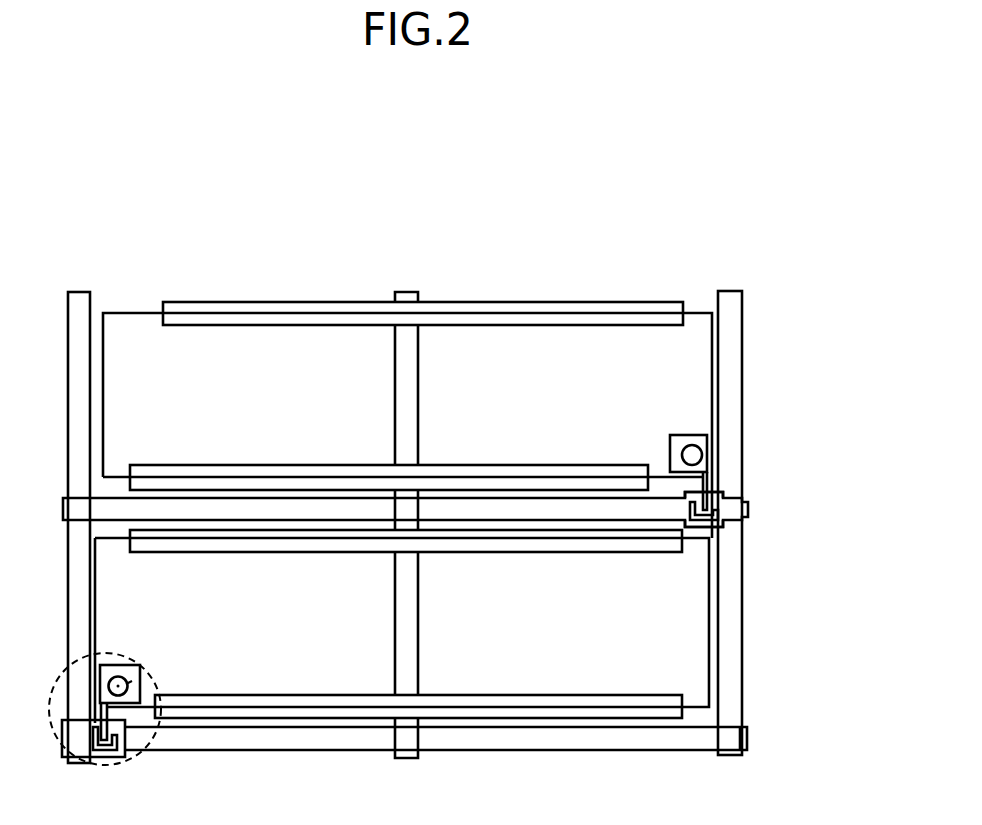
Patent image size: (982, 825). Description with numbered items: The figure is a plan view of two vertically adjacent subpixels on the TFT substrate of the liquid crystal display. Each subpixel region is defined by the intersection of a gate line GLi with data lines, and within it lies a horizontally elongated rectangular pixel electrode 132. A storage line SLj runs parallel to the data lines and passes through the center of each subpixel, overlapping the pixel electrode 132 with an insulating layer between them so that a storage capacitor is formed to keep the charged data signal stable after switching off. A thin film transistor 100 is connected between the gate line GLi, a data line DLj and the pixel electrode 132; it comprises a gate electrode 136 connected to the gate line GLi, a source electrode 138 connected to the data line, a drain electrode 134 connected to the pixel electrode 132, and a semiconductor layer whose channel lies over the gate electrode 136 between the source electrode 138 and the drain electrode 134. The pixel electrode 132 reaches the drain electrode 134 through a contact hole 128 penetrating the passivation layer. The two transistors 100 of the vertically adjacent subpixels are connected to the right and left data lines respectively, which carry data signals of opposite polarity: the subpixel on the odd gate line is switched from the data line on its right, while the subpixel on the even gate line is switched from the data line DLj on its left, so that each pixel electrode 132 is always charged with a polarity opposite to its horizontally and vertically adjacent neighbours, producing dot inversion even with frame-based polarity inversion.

The thin film transistor 100 is at (150, 672).
The contact hole 128 is at (688, 449).
The pixel electrode 132 is at (575, 312).
The drain electrode 134 is at (708, 452).
The gate electrode 136 is at (723, 493).
The source electrode 138 is at (717, 523).
The data line DLj is at (80, 292).
The storage line SLj is at (407, 293).
The gate line GLi is at (748, 508).